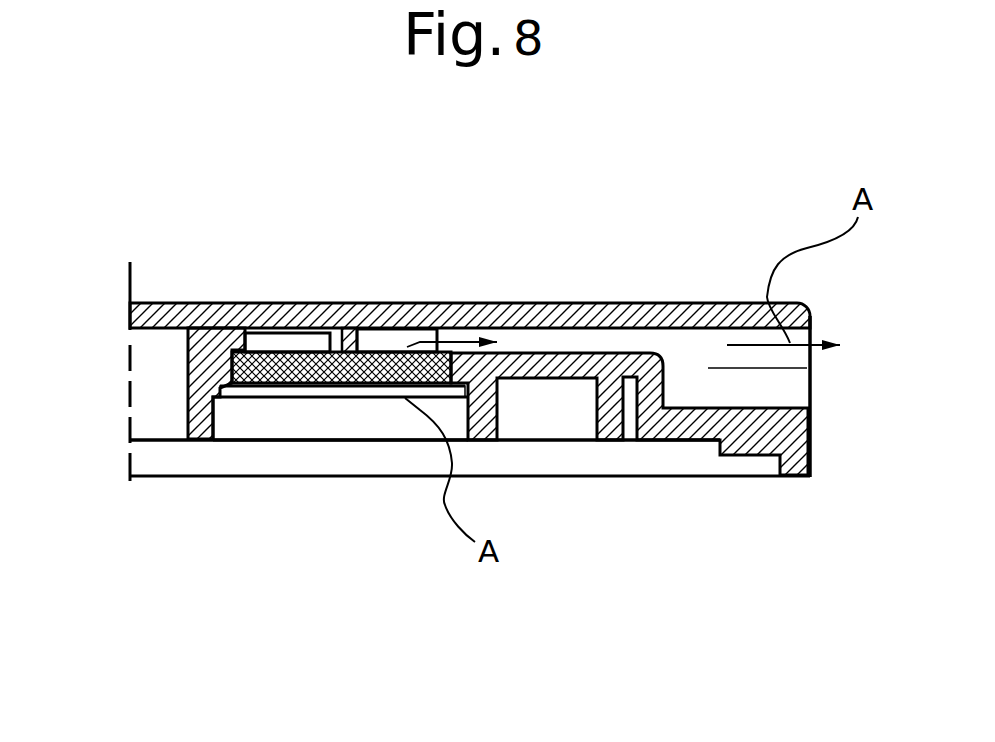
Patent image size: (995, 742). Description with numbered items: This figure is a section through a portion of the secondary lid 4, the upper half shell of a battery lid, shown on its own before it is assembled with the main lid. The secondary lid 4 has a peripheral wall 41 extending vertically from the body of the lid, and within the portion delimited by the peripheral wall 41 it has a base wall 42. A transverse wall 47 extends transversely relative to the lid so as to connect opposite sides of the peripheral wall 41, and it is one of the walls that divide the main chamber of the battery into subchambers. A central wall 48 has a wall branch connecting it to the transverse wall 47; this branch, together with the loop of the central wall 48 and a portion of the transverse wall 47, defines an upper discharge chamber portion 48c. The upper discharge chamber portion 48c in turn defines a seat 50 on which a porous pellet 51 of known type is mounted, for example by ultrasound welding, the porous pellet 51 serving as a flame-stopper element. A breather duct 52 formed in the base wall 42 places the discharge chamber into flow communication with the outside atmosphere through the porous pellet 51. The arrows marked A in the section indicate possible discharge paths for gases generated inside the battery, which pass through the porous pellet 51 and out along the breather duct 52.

The secondary lid 4 is at (725, 532).
The peripheral wall 41 is at (610, 440).
The base wall 42 is at (470, 303).
The transverse wall 47 is at (202, 437).
The central wall 48 is at (487, 437).
The upper discharge chamber portion 48c is at (255, 418).
The seat 50 is at (283, 350).
The porous pellet 51 is at (362, 384).
The breather duct 52 is at (633, 343).